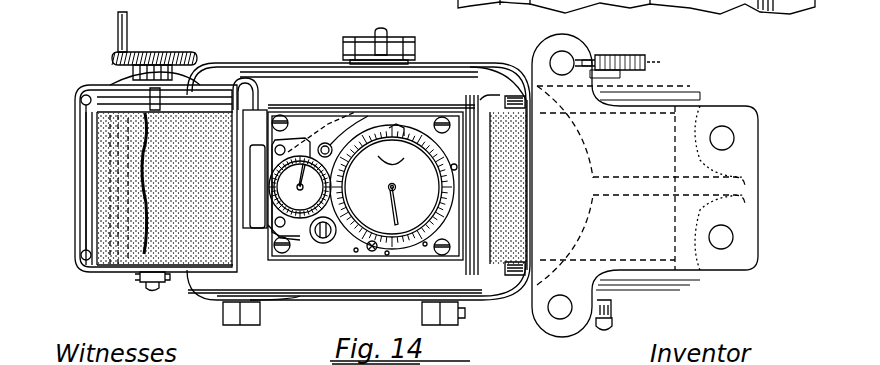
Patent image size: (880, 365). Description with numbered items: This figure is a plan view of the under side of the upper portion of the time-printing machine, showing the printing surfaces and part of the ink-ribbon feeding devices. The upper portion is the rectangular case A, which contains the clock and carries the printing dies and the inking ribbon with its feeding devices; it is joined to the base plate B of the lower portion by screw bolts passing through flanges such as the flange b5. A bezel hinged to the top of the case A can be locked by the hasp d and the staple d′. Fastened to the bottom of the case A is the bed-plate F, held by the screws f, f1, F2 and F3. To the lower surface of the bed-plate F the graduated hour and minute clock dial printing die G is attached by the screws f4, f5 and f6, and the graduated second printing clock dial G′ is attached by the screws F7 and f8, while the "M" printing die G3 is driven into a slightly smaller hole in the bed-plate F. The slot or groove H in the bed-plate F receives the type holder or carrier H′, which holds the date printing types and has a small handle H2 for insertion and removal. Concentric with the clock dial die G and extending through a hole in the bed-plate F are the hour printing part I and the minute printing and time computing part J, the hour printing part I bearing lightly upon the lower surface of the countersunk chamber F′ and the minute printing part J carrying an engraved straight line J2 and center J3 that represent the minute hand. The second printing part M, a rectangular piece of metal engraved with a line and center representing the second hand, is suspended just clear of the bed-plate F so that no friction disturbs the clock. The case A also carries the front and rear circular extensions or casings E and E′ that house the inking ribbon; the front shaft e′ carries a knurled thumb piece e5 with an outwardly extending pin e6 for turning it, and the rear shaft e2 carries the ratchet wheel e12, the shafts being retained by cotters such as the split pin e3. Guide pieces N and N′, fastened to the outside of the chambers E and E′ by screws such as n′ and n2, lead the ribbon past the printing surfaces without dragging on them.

The case A is at (228, 64).
The base plate B is at (530, 200).
The flange b5 is at (660, 88).
The front extension or casing E is at (240, 296).
The rear extension or casing E′ is at (498, 75).
The bed-plate F is at (415, 112).
The countersunk chamber F′ is at (294, 245).
The screw F2 is at (282, 253).
The screw F3 is at (442, 256).
The screw F7 is at (276, 226).
The screw f is at (284, 140).
The screw f1 is at (428, 124).
The screw f4 is at (392, 125).
The screw f5 is at (458, 168).
The screw f6 is at (372, 252).
The screw f8 is at (321, 129).
The clock dial printing die G is at (405, 258).
The second printing clock dial G′ is at (310, 238).
The "M" printing die G3 is at (353, 124).
The slot or groove H is at (183, 99).
The type holder or carrier H′ is at (255, 169).
The handle H2 is at (265, 92).
The hour printing part I is at (392, 187).
The minute printing and time computing part J is at (379, 164).
The straight line J2 is at (392, 214).
The center J3 is at (388, 187).
The second printing part M is at (306, 189).
The guide piece N is at (80, 183).
The guide piece N′ is at (505, 112).
The screw n′ is at (80, 100).
The screw n2 is at (540, 108).
The hasp d is at (366, 35).
The staple d′ is at (381, 28).
The front inking ribbon shaft e′ is at (152, 297).
The rear inking ribbon shaft e2 is at (120, 80).
The split pin or cotter e3 is at (138, 280).
The knurled thumb piece e5 is at (183, 52).
The pin or projection e6 is at (116, 20).
The ratchet wheel e12 is at (632, 66).